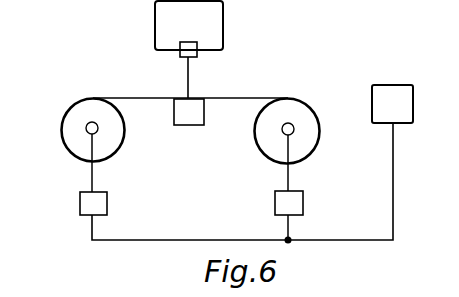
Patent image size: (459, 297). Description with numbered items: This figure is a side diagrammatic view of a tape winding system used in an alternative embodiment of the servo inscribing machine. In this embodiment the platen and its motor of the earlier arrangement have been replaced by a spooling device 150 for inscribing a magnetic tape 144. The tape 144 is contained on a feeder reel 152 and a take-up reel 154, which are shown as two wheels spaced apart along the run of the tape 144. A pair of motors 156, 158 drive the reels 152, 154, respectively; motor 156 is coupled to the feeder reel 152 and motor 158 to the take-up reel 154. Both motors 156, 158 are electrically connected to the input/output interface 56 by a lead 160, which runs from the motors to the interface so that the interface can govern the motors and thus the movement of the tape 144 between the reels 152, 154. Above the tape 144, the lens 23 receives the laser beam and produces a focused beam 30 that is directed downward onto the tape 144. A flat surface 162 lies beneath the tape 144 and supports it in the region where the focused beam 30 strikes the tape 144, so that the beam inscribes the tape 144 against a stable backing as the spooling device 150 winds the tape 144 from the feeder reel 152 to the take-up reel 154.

The lens 23 is at (183, 58).
The focused beam 30 is at (188, 75).
The input/output interface 56 is at (404, 111).
The magnetic tape 144 is at (137, 97).
The spooling device 150 is at (81, 227).
The feeder reel 152 is at (63, 113).
The take-up reel 154 is at (327, 108).
The motor 156 is at (107, 207).
The motor 158 is at (275, 207).
The lead 160 is at (393, 205).
The flat surface 162 is at (188, 126).